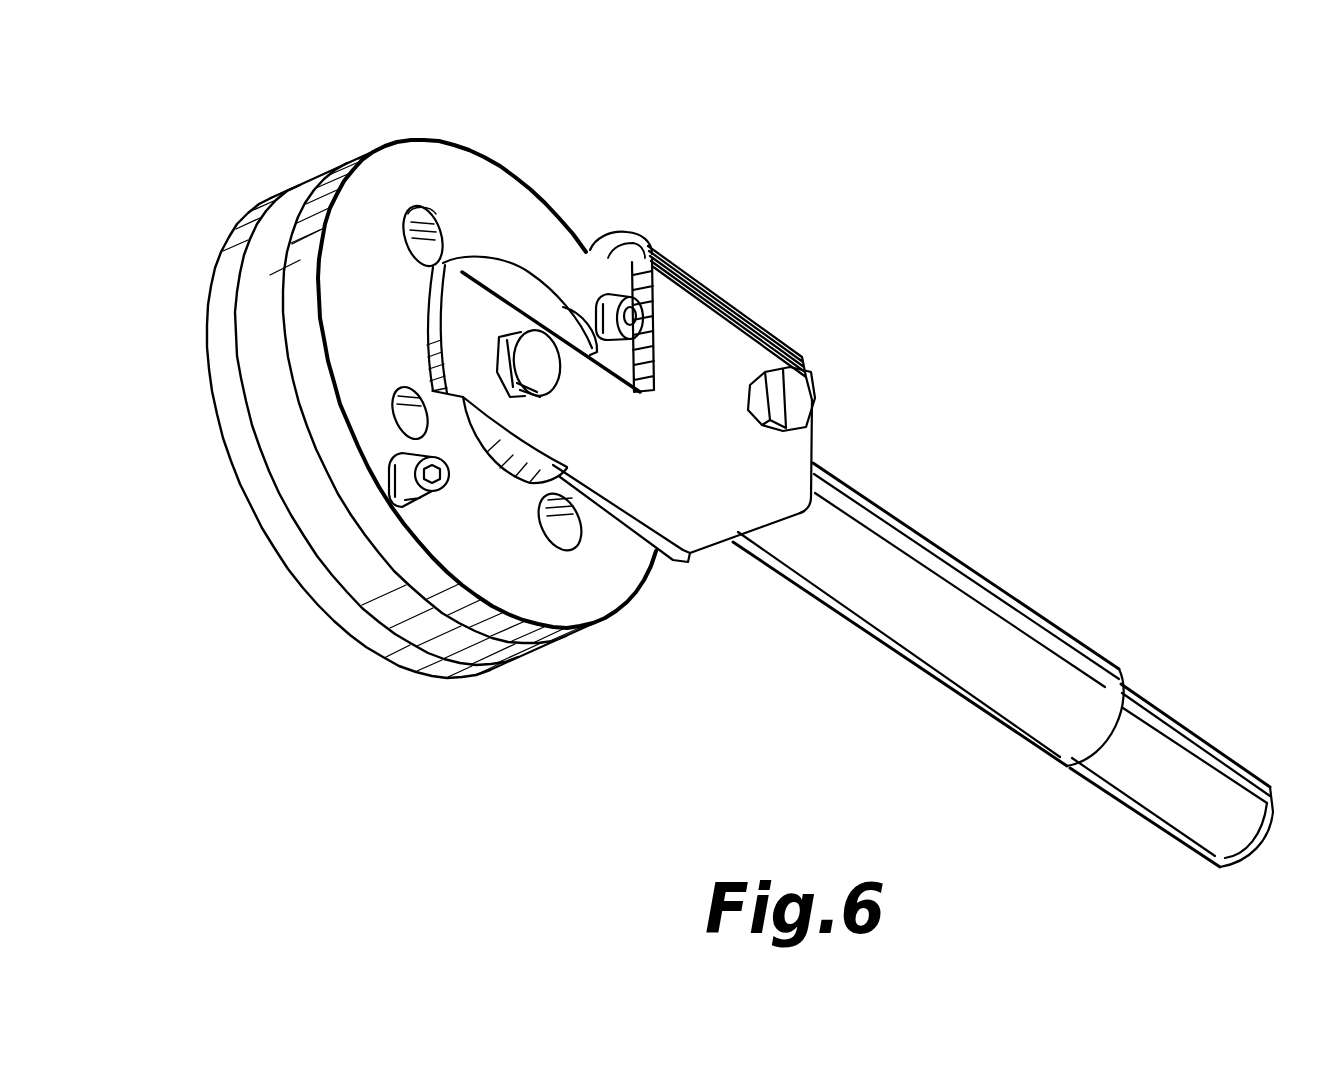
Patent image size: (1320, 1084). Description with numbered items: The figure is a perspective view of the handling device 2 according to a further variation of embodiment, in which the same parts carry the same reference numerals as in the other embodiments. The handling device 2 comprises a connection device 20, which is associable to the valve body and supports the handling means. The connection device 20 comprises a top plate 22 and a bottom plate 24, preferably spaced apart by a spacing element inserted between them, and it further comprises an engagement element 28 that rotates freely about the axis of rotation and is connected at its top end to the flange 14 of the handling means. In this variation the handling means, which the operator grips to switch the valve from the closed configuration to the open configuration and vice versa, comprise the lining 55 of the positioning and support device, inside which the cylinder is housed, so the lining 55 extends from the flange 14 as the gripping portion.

The handling device 2 is at (953, 348).
The flange 14 is at (725, 270).
The connection device 20 is at (228, 177).
The top plate 22 is at (558, 597).
The bottom plate 24 is at (356, 621).
The engagement element 28 is at (503, 250).
The lining 55 is at (996, 574).